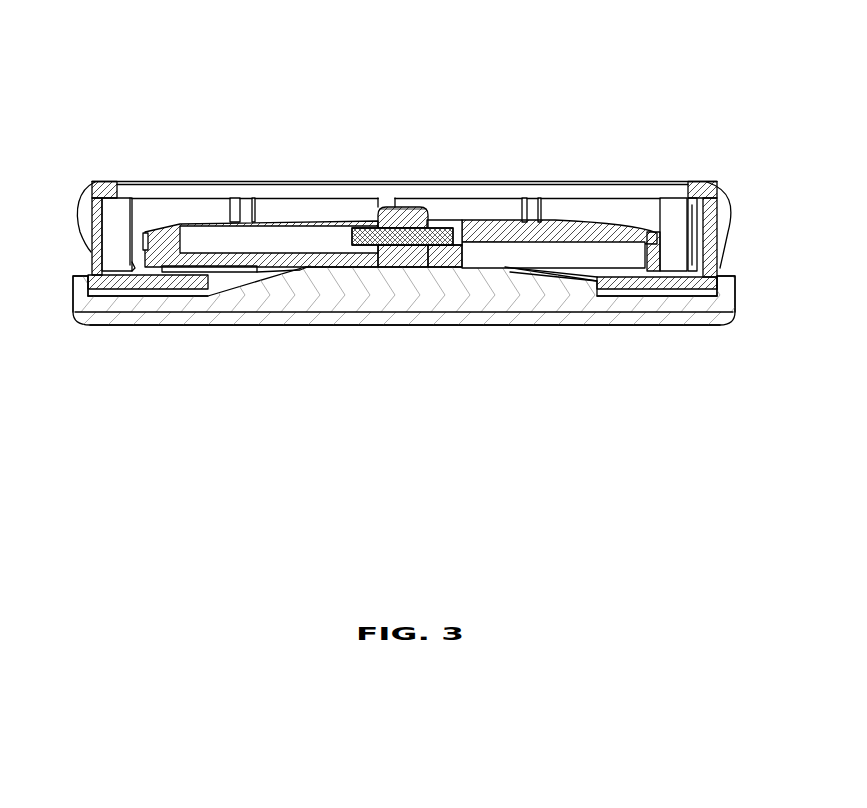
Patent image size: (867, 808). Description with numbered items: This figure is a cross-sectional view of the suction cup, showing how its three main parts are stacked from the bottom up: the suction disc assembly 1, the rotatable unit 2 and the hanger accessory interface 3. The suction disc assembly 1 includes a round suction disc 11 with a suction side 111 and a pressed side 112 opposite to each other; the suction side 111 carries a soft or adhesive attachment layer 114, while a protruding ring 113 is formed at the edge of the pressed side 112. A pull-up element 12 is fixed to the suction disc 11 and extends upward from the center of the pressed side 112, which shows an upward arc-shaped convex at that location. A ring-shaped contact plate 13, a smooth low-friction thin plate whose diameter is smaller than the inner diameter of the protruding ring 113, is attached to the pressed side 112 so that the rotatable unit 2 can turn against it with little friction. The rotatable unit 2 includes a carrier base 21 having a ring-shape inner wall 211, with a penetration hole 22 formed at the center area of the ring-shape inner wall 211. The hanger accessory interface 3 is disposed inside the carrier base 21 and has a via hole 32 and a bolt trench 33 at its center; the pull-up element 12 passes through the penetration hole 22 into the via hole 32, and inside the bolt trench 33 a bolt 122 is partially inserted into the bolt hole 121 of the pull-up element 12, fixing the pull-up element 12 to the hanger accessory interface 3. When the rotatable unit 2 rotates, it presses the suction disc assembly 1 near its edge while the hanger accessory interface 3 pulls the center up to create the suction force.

The suction disc assembly 1 is at (401, 268).
The rotatable unit 2 is at (401, 262).
The carrier base 21 is at (404, 180).
The penetration hole 22 is at (401, 283).
The ring-shape inner wall 211 is at (636, 279).
The hanger accessory interface 3 is at (583, 227).
The bolt trench 33 is at (300, 245).
The via hole 32 is at (372, 257).
The pull-up element 12 is at (450, 167).
The bolt hole 121 is at (417, 207).
The bolt 122 is at (368, 230).
The suction disc 11 is at (401, 356).
The suction side 111 is at (543, 325).
The pressed side 112 is at (155, 296).
The protruding ring 113 is at (77, 287).
The attachment layer 114 is at (270, 313).
The contact plate 13 is at (170, 290).